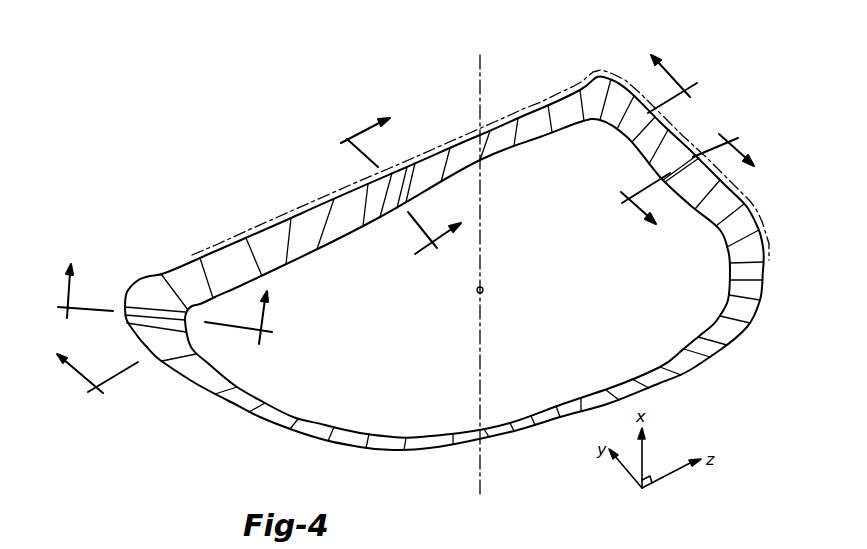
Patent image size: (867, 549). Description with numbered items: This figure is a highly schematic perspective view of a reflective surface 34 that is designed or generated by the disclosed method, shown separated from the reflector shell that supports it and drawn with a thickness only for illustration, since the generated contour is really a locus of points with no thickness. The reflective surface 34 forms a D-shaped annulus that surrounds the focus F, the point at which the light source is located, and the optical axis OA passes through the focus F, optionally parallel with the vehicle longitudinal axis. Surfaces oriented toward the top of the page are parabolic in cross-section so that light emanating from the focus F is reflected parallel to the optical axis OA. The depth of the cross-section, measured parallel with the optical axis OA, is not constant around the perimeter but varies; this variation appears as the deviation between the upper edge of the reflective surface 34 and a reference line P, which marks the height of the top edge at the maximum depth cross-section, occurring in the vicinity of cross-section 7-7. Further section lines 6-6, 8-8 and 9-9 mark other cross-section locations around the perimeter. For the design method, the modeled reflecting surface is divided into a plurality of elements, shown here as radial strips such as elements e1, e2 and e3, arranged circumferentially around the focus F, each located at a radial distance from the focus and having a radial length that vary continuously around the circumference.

The reflective surface 34 is at (548, 97).
The element e1 is at (157, 312).
The element e2 is at (390, 189).
The element e3 is at (693, 164).
The reference line P is at (581, 67).
The optical axis OA is at (479, 266).
The focus F is at (489, 291).
The cross-section 6- 6 is at (366, 213).
The cross-section 7- 7 is at (167, 307).
The cross-section 8- 8 is at (402, 188).
The cross-section 9- 9 is at (698, 192).